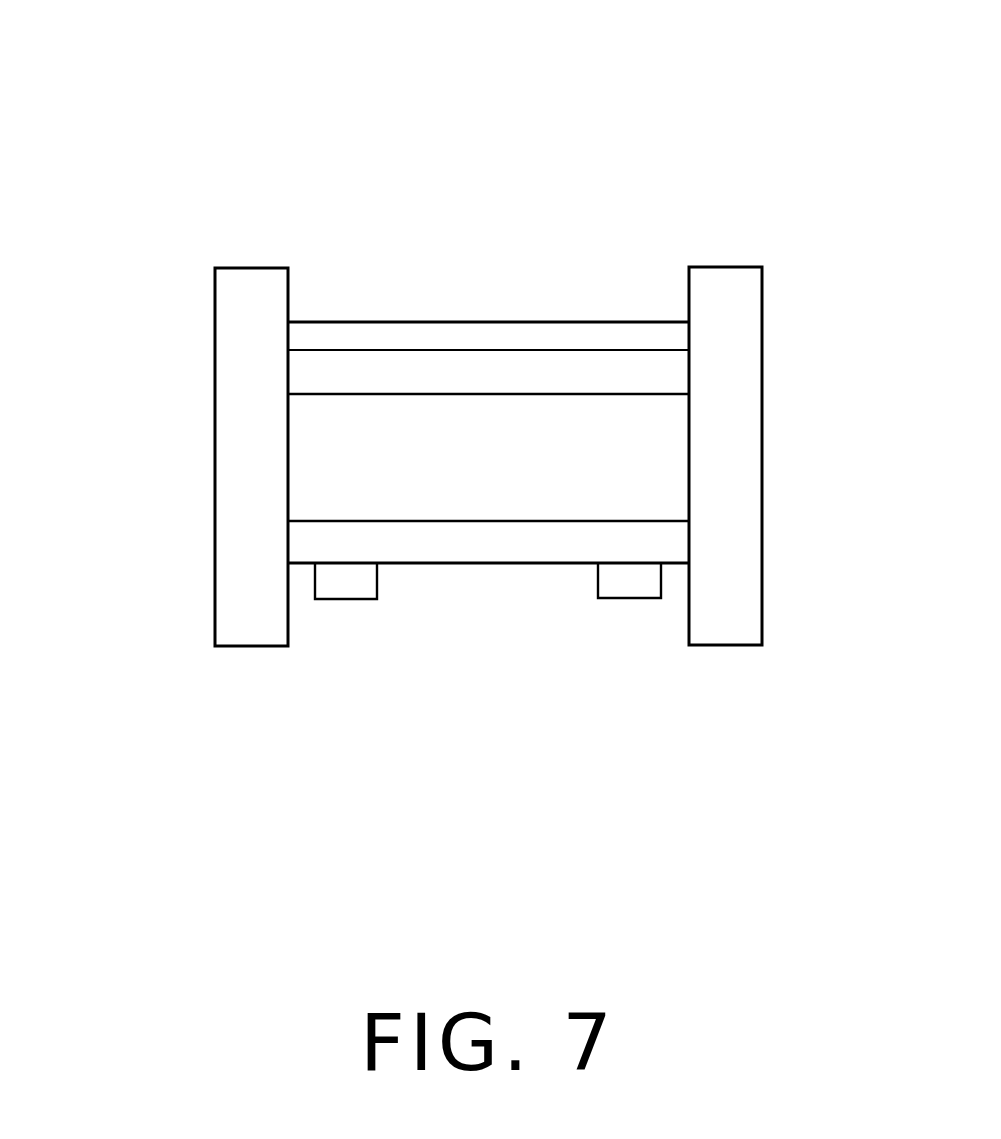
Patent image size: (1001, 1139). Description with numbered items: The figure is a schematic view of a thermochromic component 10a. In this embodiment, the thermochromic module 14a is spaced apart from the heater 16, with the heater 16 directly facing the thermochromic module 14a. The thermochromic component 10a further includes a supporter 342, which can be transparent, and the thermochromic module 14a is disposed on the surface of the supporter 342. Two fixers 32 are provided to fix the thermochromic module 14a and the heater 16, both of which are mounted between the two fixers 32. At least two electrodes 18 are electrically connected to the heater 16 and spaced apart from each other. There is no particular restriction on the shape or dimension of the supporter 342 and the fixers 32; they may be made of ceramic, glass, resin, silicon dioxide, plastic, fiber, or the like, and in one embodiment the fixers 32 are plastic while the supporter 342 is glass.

The thermochromic component 10a is at (200, 86).
The fixers 32 is at (247, 460).
The supporter 342 is at (358, 337).
The thermochromic module 14a is at (473, 373).
The heater 16 is at (502, 555).
The electrodes 18 is at (347, 582).